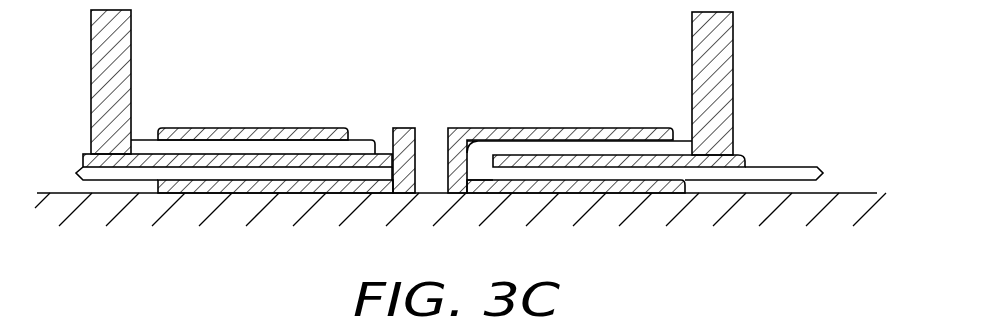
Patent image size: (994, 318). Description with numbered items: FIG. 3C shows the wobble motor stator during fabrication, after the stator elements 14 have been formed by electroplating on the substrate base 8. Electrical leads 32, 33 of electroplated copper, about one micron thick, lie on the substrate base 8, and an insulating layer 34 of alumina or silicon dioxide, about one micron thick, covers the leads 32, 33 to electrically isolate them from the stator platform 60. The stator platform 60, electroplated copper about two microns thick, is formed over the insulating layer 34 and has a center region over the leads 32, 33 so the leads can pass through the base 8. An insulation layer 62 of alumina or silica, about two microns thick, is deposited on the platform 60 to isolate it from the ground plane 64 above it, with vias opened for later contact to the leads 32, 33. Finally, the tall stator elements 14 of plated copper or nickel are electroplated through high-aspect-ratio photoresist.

The substrate base 8 is at (865, 193).
The stator elements 14 is at (722, 67).
The electrical lead 32 is at (191, 176).
The electrical lead 33 is at (590, 176).
The insulating layer 34 is at (125, 182).
The stator platform 60 is at (86, 157).
The insulation layer 62 is at (257, 148).
The ground plane 64 is at (587, 128).